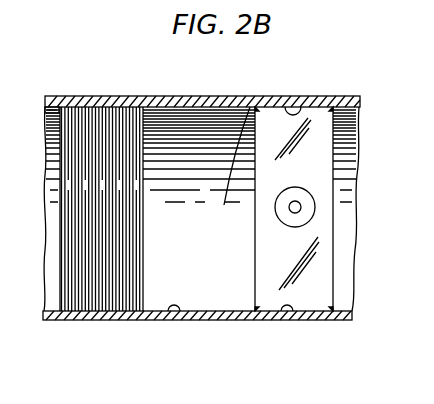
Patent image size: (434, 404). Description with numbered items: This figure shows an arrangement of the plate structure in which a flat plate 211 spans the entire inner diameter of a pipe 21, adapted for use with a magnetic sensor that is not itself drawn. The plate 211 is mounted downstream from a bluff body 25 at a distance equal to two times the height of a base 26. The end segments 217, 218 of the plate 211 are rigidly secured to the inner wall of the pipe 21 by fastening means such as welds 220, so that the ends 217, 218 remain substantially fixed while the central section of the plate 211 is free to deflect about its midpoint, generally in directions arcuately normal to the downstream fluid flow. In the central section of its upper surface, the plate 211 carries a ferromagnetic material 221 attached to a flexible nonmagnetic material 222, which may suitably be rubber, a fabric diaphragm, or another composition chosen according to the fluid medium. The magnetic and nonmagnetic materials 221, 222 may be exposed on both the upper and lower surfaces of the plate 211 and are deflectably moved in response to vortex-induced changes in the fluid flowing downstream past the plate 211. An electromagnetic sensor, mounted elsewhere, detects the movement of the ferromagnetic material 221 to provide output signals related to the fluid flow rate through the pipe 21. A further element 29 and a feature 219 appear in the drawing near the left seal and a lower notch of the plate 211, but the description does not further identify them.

The pipe 21 is at (163, 97).
The bluff body 25 is at (125, 159).
The base 26 is at (58, 296).
The seal 29 is at (50, 102).
The flat plate 211 is at (263, 277).
The end segment 217 is at (303, 107).
The end segment 218 is at (286, 313).
The lower notch 219 is at (169, 312).
The weld 220 is at (231, 168).
The ferromagnetic material 221 is at (292, 213).
The flexible nonmagnetic material 222 is at (297, 187).